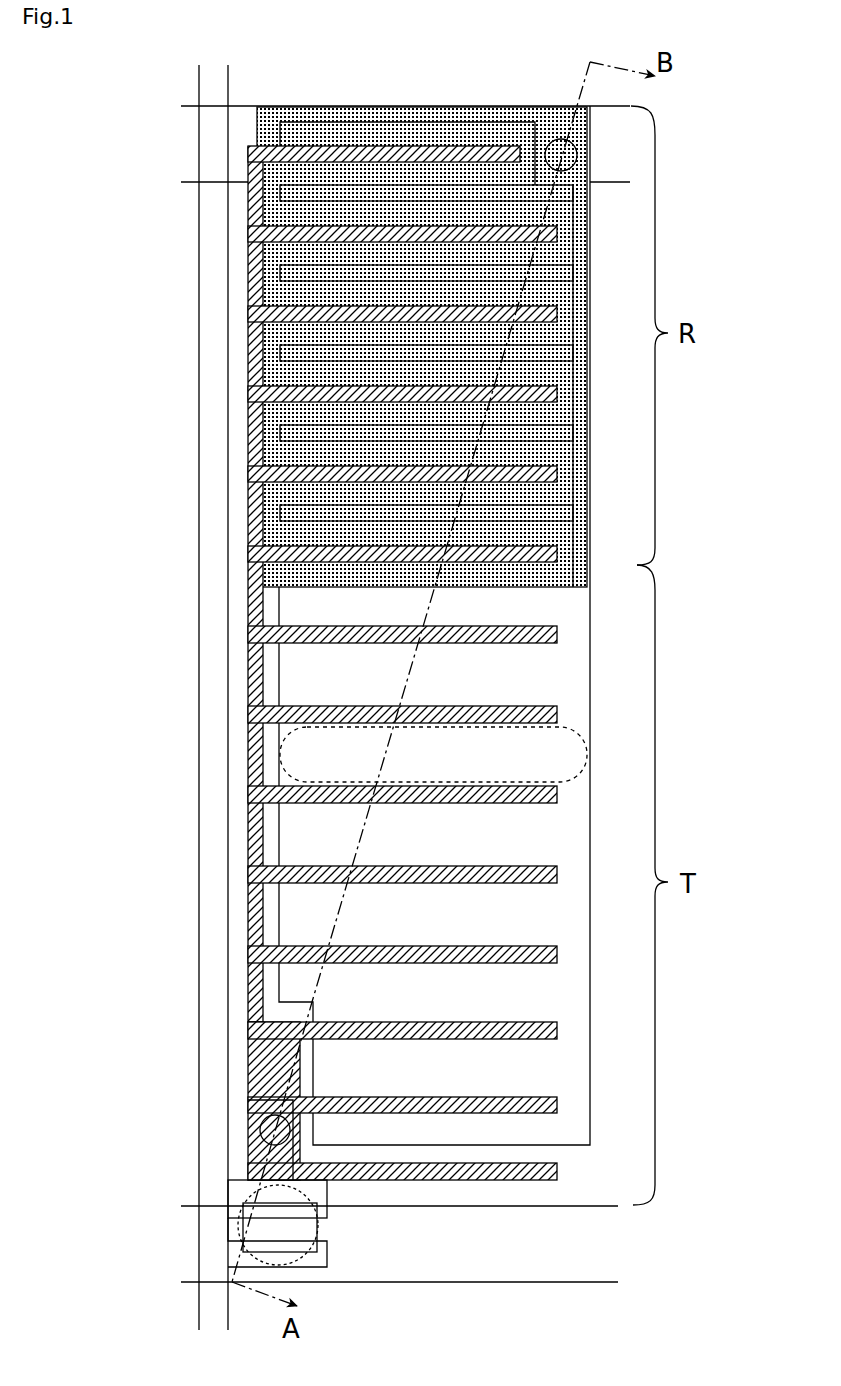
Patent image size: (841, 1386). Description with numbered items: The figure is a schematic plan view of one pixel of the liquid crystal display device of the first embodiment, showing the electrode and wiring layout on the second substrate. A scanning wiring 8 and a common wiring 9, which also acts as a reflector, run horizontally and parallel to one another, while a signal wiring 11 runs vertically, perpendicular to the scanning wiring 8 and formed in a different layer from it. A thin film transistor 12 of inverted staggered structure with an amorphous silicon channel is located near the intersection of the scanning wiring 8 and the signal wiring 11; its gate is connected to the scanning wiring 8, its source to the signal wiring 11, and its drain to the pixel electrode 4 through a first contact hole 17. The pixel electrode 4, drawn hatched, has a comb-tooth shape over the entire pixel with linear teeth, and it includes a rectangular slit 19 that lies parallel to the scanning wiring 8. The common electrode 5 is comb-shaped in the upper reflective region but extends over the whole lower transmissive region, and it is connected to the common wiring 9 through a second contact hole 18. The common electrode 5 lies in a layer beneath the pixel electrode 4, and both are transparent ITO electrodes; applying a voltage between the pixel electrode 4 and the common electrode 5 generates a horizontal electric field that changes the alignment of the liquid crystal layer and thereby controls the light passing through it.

The pixel electrode 4 is at (250, 700).
The common electrode 5 is at (582, 814).
The scanning wiring 8 is at (187, 1233).
The common wiring (reflector) 9 is at (183, 125).
The signal wiring 11 is at (204, 312).
The thin film transistor 12 is at (320, 1225).
The first contact hole 17 is at (262, 1126).
The second contact hole 18 is at (578, 147).
The rectangular slit 19 is at (580, 733).